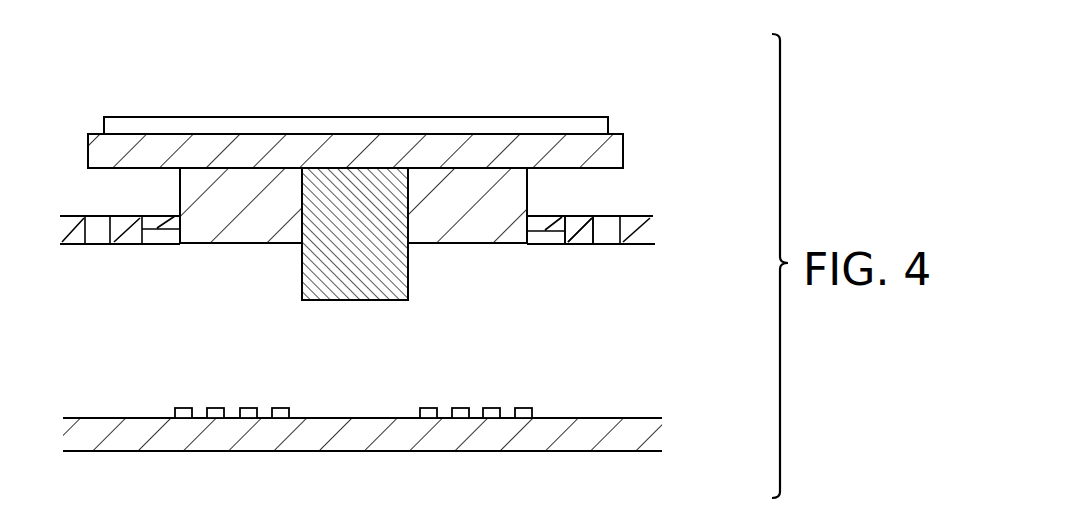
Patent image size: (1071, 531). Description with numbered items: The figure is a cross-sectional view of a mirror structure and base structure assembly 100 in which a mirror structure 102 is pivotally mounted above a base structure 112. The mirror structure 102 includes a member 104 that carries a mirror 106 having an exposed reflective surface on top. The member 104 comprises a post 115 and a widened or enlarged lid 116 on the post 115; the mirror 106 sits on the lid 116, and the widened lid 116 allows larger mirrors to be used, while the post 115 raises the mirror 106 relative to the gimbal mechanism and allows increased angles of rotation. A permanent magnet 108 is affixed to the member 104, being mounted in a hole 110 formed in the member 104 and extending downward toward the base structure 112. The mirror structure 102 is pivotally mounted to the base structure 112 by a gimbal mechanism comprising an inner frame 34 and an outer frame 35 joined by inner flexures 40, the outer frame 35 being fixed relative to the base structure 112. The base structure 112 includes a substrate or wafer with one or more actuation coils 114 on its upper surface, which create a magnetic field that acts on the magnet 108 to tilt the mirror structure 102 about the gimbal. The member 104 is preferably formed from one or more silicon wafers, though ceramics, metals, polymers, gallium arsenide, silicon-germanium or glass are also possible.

The mirror structure and base structure assembly 100 is at (58, 86).
The mirror structure 102 is at (617, 82).
The member 104 is at (426, 184).
The mirror 106 is at (328, 118).
The permanent magnet 108 is at (300, 272).
The hole 110 is at (408, 222).
The base structure 112 is at (669, 385).
The actuation coils 114 is at (280, 405).
The post 115 is at (528, 189).
The widened lid 116 is at (625, 150).
The inner frame 34 is at (573, 247).
The outer frame 35 is at (647, 218).
The inner flexures 40 is at (167, 215).